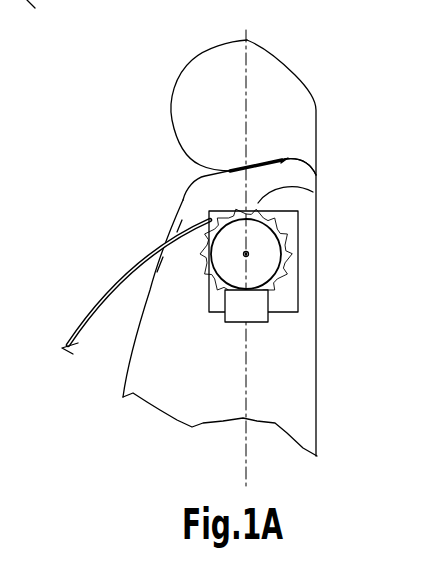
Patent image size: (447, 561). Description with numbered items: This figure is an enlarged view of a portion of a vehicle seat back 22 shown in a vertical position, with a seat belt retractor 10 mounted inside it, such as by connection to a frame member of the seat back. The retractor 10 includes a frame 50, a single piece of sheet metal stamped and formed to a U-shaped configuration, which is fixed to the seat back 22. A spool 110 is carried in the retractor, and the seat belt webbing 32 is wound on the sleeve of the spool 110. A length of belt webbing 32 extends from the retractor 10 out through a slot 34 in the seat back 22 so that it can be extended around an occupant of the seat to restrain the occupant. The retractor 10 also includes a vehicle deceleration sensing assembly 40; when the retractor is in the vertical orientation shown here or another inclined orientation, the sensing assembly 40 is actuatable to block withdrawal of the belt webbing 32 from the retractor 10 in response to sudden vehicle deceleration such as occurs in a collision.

The retractor 10 is at (183, 192).
The seat back 22 is at (317, 172).
The belt webbing 32 is at (95, 307).
The slot 34 is at (167, 235).
The vehicle deceleration sensing assembly 40 is at (257, 322).
The frame 50 is at (213, 241).
The spool 110 is at (313, 192).